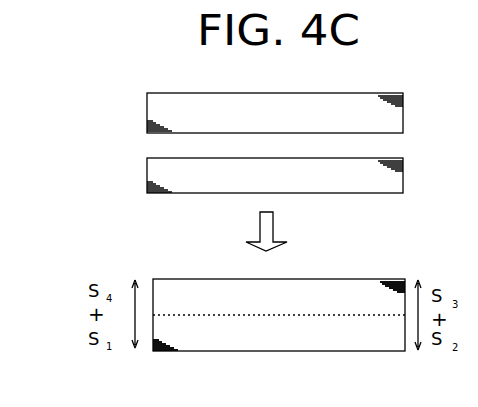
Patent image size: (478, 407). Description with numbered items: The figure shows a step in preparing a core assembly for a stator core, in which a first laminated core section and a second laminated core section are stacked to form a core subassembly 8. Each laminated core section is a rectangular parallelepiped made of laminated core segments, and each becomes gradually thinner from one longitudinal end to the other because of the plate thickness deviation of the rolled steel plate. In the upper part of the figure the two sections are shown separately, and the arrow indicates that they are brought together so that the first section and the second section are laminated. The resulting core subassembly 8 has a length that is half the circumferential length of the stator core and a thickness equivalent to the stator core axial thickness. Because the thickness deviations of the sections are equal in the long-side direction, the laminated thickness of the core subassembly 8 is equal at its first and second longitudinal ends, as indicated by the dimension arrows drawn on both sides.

The core subassembly 8 is at (172, 274).